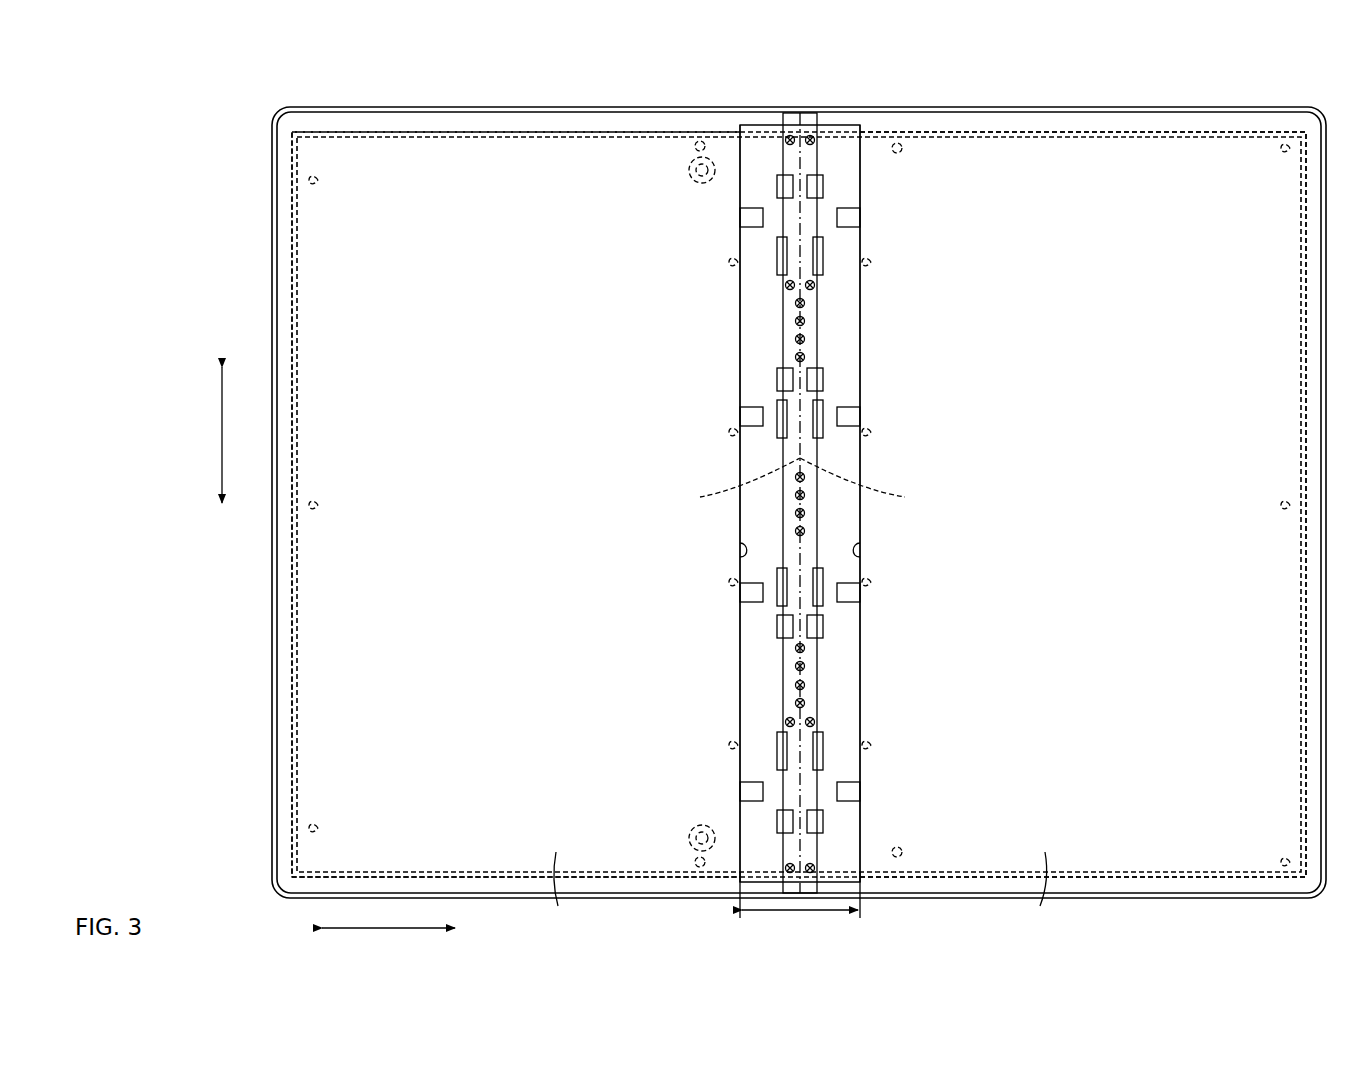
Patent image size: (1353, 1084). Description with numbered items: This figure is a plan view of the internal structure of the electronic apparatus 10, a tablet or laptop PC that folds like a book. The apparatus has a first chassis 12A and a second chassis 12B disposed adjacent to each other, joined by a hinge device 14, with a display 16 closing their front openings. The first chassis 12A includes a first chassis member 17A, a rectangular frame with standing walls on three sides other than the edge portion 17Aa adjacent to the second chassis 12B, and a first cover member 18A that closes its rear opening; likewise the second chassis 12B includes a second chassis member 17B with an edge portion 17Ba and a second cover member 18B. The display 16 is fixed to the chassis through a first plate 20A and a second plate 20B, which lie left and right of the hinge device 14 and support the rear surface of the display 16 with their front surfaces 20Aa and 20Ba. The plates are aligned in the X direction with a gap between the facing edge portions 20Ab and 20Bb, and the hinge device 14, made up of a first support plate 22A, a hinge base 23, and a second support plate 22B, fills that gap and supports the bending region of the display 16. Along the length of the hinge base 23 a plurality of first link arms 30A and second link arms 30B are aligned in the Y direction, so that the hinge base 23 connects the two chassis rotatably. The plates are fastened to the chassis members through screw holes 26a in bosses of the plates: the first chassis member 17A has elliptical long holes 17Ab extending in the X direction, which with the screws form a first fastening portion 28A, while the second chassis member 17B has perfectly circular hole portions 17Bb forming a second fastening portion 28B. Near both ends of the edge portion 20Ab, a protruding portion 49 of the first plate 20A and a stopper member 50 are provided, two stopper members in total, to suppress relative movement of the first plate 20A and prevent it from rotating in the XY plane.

The electronic apparatus 10 is at (228, 75).
The first chassis 12A is at (433, 103).
The second chassis 12B is at (1142, 103).
The hinge device 14 is at (848, 337).
The display 16 is at (1232, 128).
The first chassis member 17A is at (540, 106).
The second chassis member 17B is at (1062, 106).
The edge portion 17Aa is at (882, 483).
The edge portion 17Ba is at (716, 483).
The long holes 17Ab is at (571, 511).
The hole portions 17Bb is at (1076, 504).
The first cover member 18A is at (603, 158).
The second cover member 18B is at (997, 158).
The first plate 20A is at (575, 893).
The front surface 20Aa is at (556, 879).
The second plate 20B is at (1049, 896).
The front surface 20Ba is at (1043, 879).
The edge portion 20Ab is at (741, 550).
The edge portion 20Bb is at (859, 550).
The first support plate 22A is at (748, 663).
The second support plate 22B is at (850, 663).
The hinge base 23 is at (783, 325).
The screw hole 26a is at (799, 511).
The first fastening portion 28A is at (523, 504).
The second fastening portion 28B is at (1282, 148).
The first link arm 30A is at (778, 245).
The second link arm 30B is at (823, 245).
The protruding portion 49 is at (690, 170).
The stopper member 50 is at (694, 183).